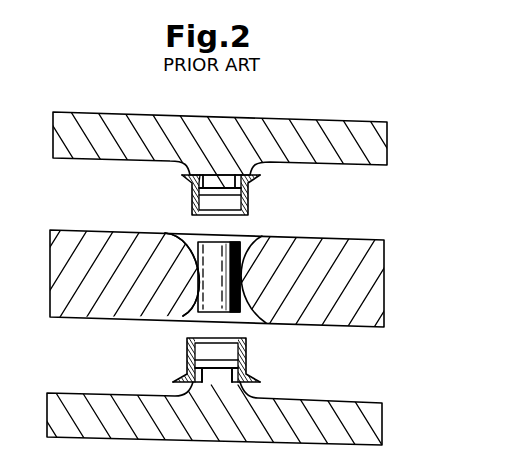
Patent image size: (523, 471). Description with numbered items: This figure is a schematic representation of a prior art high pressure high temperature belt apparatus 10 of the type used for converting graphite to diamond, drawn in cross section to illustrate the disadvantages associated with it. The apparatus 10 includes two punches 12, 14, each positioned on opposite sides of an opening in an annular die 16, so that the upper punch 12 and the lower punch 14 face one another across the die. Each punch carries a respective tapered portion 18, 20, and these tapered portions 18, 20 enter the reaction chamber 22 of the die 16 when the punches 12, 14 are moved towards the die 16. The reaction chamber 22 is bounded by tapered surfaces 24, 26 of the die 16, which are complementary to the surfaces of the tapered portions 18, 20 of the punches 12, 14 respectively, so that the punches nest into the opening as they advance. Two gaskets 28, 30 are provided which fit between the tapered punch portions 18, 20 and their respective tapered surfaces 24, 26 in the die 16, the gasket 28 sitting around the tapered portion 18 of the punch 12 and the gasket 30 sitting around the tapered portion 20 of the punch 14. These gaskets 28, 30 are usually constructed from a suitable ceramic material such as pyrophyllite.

The apparatus 10 is at (21, 289).
The punch 12 is at (236, 150).
The punch 14 is at (231, 409).
The annular die 16 is at (261, 240).
The tapered portion 18 is at (243, 171).
The tapered portion 20 is at (243, 392).
The reaction chamber 22 is at (187, 317).
The tapered surface 24 is at (190, 236).
The tapered surface 26 is at (245, 315).
The gasket 28 is at (190, 178).
The gasket 30 is at (187, 358).